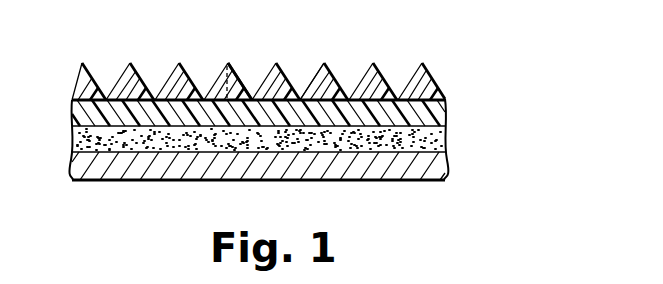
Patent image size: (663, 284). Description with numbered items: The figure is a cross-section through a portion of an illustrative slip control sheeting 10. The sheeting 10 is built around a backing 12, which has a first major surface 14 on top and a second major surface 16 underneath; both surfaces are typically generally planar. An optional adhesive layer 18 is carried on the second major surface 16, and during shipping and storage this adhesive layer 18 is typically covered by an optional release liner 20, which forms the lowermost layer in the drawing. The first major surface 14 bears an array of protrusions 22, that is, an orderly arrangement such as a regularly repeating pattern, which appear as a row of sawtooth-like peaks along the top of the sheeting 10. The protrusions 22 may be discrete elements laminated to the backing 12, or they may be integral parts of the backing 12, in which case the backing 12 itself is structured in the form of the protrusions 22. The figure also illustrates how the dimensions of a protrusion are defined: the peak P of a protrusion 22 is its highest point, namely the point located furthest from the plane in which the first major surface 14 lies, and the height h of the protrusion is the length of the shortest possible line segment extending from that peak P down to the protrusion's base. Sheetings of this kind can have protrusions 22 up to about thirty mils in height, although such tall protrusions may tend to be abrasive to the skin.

The slip control sheeting 10 is at (450, 41).
The backing 12 is at (432, 114).
The first major surface 14 is at (328, 86).
The second major surface 16 is at (408, 131).
The adhesive layer 18 is at (97, 142).
The release liner 20 is at (213, 165).
The protrusions 22 is at (127, 72).
The peak P is at (227, 64).
The height h is at (237, 78).